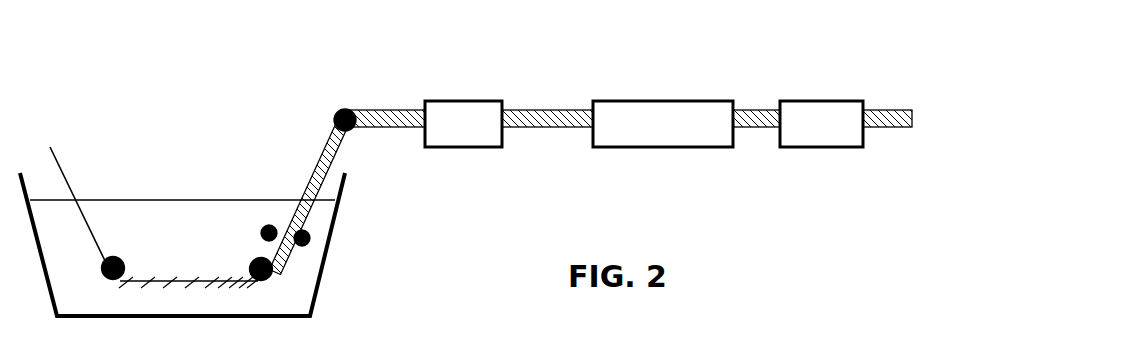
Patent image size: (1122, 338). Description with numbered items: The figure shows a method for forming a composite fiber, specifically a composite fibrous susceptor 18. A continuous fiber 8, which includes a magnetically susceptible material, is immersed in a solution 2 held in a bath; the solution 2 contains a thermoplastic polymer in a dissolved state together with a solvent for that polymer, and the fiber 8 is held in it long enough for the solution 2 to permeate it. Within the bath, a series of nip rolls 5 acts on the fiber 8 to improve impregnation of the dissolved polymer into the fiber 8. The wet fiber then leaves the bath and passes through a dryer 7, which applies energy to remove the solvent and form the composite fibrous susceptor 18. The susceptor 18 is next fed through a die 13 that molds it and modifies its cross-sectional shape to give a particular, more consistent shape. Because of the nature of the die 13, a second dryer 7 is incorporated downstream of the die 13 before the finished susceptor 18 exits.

The solution 2 is at (187, 249).
The nip rolls 5 is at (268, 227).
The dryer 7 is at (448, 101).
The continuous fiber 8 is at (67, 177).
The die 13 is at (643, 148).
The composite fibrous susceptor 18 is at (890, 110).